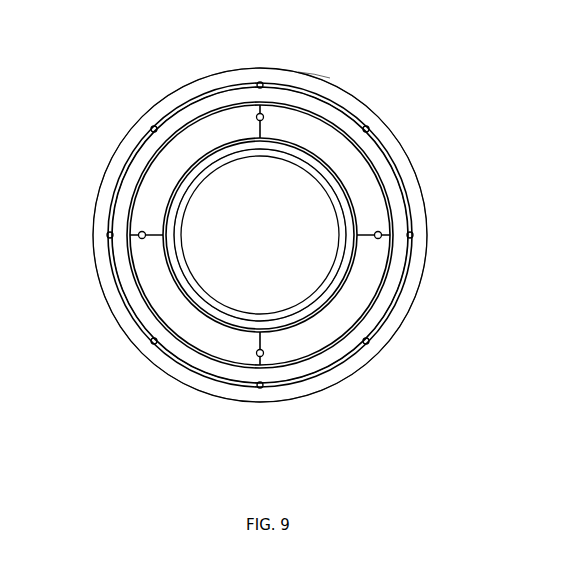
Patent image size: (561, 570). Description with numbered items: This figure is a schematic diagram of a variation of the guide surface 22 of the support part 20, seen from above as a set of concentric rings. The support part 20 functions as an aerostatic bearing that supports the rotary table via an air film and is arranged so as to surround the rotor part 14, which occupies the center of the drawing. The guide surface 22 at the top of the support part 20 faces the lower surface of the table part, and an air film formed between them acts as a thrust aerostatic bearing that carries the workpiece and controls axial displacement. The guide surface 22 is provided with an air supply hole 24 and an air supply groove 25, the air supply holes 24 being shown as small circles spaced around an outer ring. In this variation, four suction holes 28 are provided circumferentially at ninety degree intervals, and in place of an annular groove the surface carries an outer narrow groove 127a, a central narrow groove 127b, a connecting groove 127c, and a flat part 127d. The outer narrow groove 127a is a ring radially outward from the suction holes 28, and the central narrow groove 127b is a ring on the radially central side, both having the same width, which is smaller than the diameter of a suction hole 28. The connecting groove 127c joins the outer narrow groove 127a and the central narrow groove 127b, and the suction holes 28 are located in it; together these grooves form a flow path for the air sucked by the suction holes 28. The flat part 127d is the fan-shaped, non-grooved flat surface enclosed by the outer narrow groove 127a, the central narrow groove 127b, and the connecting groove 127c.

The rotor part 14 is at (260, 290).
The support part 20 is at (292, 235).
The guide surface 22 is at (278, 235).
The air supply hole 24 is at (258, 235).
The air supply groove 25 is at (314, 49).
The suction hole 28 is at (260, 235).
The outer narrow groove 127a is at (284, 235).
The central narrow groove 127b is at (260, 235).
The connecting groove 127c is at (260, 235).
The flat part 127d is at (267, 230).